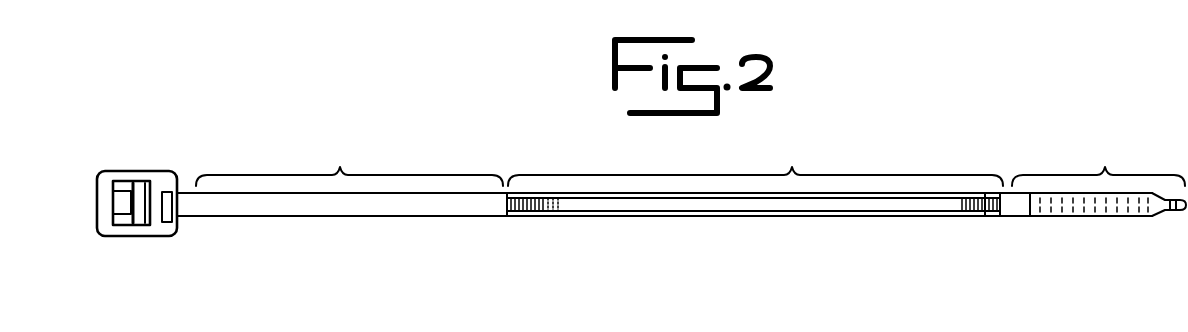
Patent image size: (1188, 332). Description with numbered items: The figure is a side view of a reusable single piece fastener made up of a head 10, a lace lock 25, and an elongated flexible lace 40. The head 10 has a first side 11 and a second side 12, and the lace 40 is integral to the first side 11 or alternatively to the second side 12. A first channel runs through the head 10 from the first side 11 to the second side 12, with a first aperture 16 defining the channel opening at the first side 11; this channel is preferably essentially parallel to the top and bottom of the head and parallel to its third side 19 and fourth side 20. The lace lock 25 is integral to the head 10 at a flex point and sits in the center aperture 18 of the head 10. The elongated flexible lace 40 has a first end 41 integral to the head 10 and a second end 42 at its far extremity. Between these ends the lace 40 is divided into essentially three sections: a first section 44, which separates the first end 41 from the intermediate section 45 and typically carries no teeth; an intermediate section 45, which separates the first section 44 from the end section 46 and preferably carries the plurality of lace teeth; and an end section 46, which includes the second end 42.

The head 10 is at (163, 171).
The first side 11 is at (186, 173).
The second side 12 is at (97, 215).
The first aperture 16 is at (175, 213).
The center aperture 18 is at (113, 190).
The third side 19 is at (137, 171).
The fourth side 20 is at (127, 237).
The lace lock 25 is at (135, 195).
The elongated flexible lace 40 is at (583, 217).
The first end 41 is at (197, 203).
The second end 42 is at (1163, 217).
The first section 44 is at (349, 160).
The intermediate section 45 is at (755, 160).
The end section 46 is at (1098, 160).